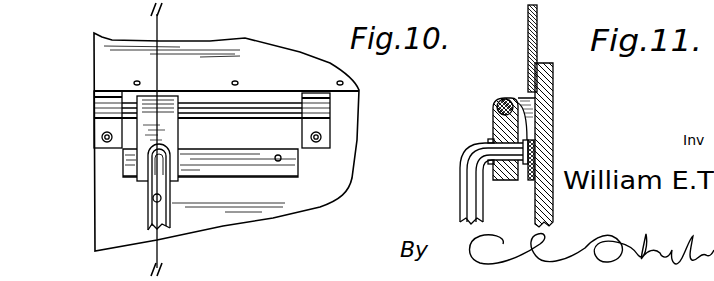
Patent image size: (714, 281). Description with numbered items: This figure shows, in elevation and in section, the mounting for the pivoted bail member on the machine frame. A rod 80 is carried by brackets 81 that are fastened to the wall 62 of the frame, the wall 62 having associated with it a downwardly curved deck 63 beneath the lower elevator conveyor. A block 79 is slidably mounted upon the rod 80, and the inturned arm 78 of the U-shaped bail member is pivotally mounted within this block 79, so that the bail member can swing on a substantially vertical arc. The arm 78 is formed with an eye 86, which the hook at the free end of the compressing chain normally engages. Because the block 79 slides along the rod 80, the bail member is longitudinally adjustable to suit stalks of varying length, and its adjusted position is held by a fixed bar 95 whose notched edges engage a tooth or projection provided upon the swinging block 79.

In FIG. 10, the wall 62 is at (327, 181).
In FIG. 11, the wall 62 is at (547, 136).
In FIG. 10, the downwardly curved deck 63 is at (307, 70).
In FIG. 10, the arm 78 is at (153, 212).
In FIG. 11, the arm 78 is at (464, 183).
In FIG. 10, the block 79 is at (168, 132).
In FIG. 11, the block 79 is at (493, 123).
In FIG. 10, the rod 80 is at (246, 103).
In FIG. 11, the rod 80 is at (496, 105).
In FIG. 10, the brackets 81 is at (101, 128).
In FIG. 11, the brackets 81 is at (538, 112).
In FIG. 10, the eye 86 is at (153, 199).
In FIG. 10, the fixed bar 95 is at (254, 163).
In FIG. 11, the fixed bar 95 is at (531, 178).